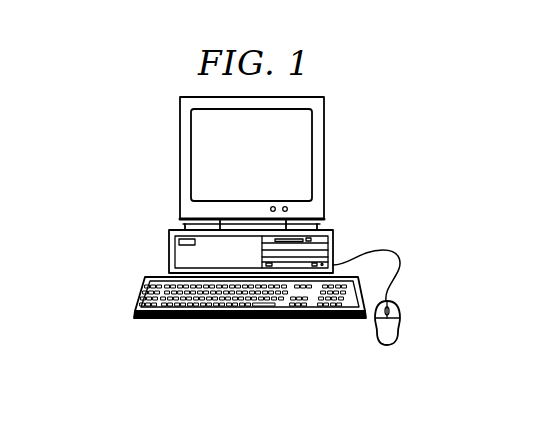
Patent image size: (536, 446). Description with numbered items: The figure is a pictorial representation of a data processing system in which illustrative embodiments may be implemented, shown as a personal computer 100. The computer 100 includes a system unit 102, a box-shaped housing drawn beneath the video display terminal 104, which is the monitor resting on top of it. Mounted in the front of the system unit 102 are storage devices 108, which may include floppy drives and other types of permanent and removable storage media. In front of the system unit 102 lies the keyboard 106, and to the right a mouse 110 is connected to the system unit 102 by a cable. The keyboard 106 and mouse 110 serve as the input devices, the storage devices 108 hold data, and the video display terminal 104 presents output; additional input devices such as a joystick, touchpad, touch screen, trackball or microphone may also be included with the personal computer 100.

The computer 100 is at (113, 139).
The system unit 102 is at (168, 252).
The video display terminal 104 is at (324, 157).
The keyboard 106 is at (162, 320).
The storage devices 108 is at (313, 242).
The mouse 110 is at (387, 345).